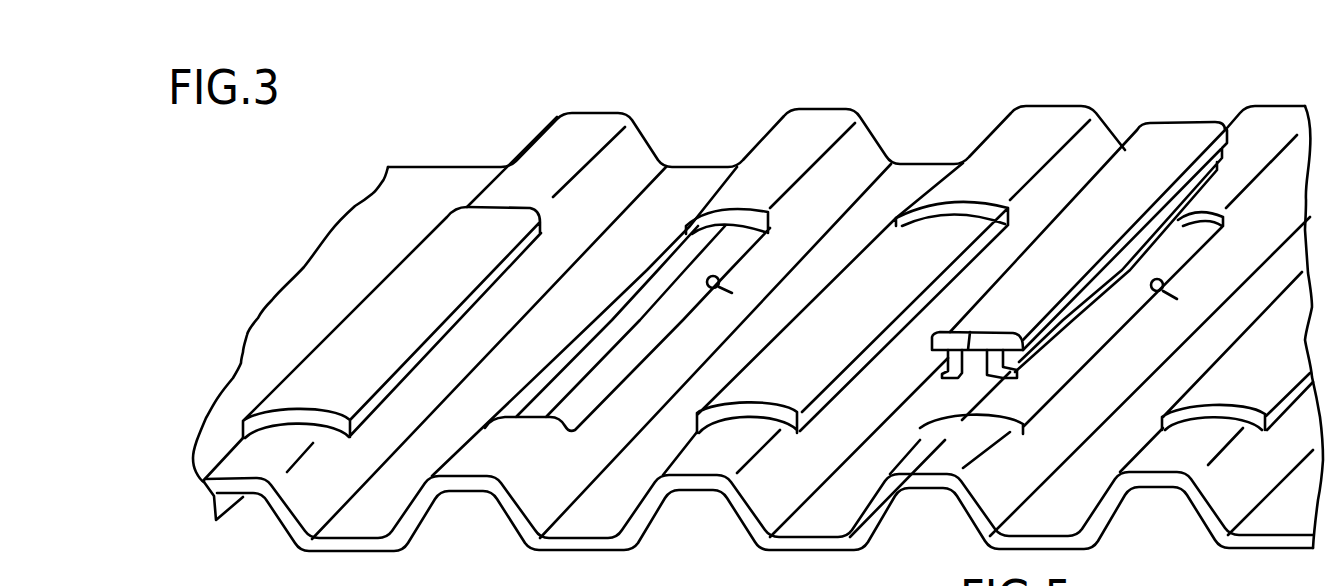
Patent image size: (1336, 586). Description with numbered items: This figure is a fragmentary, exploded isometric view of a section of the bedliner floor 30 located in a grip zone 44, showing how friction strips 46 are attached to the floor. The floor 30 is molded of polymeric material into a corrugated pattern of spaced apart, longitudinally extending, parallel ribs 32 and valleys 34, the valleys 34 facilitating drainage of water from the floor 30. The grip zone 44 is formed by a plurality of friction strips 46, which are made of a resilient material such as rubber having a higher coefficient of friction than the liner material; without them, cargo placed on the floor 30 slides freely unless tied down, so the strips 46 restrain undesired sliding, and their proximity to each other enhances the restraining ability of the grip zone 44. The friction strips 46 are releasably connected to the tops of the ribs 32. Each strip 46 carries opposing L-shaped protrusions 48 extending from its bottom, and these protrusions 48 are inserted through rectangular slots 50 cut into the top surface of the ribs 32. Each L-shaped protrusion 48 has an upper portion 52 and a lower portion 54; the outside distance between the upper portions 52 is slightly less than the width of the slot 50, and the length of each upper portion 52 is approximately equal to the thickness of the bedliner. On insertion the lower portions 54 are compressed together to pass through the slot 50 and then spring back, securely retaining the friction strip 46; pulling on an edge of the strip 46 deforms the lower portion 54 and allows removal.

The floor 30 is at (423, 187).
The ribs 32 is at (592, 113).
The valleys 34 is at (682, 197).
The grip zone 44 is at (884, 100).
The friction strip 46 is at (1161, 140).
The L-shaped protrusion 48 is at (939, 356).
The slot 50 is at (958, 296).
The upper portion 52 is at (972, 335).
The lower portion 54 is at (946, 380).